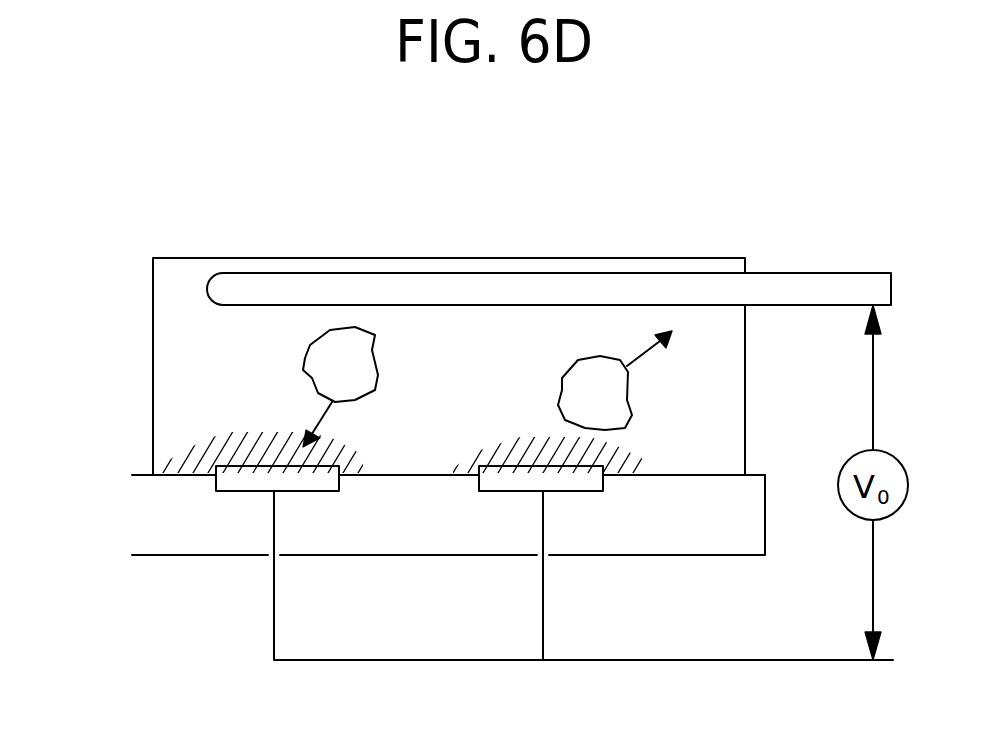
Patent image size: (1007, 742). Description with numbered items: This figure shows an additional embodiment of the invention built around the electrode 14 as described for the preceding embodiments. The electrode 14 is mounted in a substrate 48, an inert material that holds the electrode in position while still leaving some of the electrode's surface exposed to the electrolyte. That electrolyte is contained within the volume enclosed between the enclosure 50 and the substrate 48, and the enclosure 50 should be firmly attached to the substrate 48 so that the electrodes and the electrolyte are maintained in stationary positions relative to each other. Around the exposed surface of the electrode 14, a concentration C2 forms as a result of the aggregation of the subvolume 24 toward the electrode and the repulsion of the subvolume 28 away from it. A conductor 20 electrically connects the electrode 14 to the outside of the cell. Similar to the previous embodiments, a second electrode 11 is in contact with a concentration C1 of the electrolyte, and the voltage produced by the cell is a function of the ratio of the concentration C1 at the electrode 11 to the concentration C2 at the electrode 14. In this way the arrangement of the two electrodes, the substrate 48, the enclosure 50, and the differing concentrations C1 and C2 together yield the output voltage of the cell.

The enclosure 50 is at (180, 258).
The electrode 11 is at (790, 283).
The concentration C1 is at (182, 303).
The substrate 48 is at (155, 527).
The electrode 14 is at (503, 482).
The concentration C2 is at (185, 462).
The subvolume 24 is at (303, 367).
The subvolume 28 is at (632, 408).
The conductor 20 is at (274, 620).